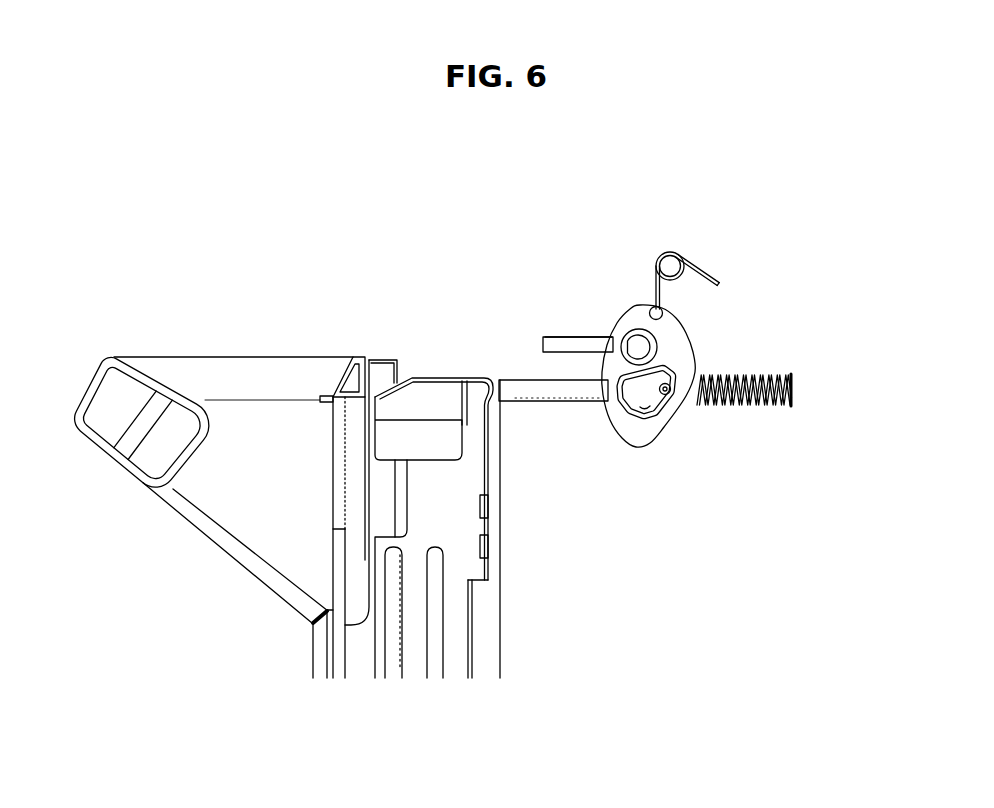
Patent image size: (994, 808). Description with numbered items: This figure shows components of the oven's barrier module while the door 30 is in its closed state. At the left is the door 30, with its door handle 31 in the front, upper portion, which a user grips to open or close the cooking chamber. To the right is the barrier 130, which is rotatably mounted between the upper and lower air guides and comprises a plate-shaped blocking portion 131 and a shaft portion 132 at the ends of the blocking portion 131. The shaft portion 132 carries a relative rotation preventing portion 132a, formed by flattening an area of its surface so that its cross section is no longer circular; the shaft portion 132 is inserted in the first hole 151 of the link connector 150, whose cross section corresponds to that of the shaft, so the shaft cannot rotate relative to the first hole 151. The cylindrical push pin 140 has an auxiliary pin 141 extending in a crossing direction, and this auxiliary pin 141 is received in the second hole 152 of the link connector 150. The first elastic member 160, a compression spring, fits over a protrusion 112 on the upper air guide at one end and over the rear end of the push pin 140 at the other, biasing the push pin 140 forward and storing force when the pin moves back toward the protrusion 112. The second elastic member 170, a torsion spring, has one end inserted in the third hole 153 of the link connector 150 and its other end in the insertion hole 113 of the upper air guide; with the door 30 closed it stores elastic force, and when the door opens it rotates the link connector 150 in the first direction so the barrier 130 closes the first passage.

The door 30 is at (292, 641).
The door handle 31 is at (172, 368).
The protrusion 112 is at (776, 408).
The insertion hole 113 is at (724, 286).
The barrier 130 is at (551, 325).
The blocking portion 131 is at (568, 336).
The shaft portion 132 is at (655, 345).
The relative rotation preventing portion 132a is at (626, 343).
The push pin 140 is at (526, 414).
The auxiliary pin 141 is at (664, 403).
The link connector 150 is at (619, 438).
The first hole 151 is at (612, 428).
The second hole 152 is at (647, 410).
The third hole 153 is at (662, 316).
The first elastic member 160 is at (739, 422).
The second elastic member 170 is at (668, 240).